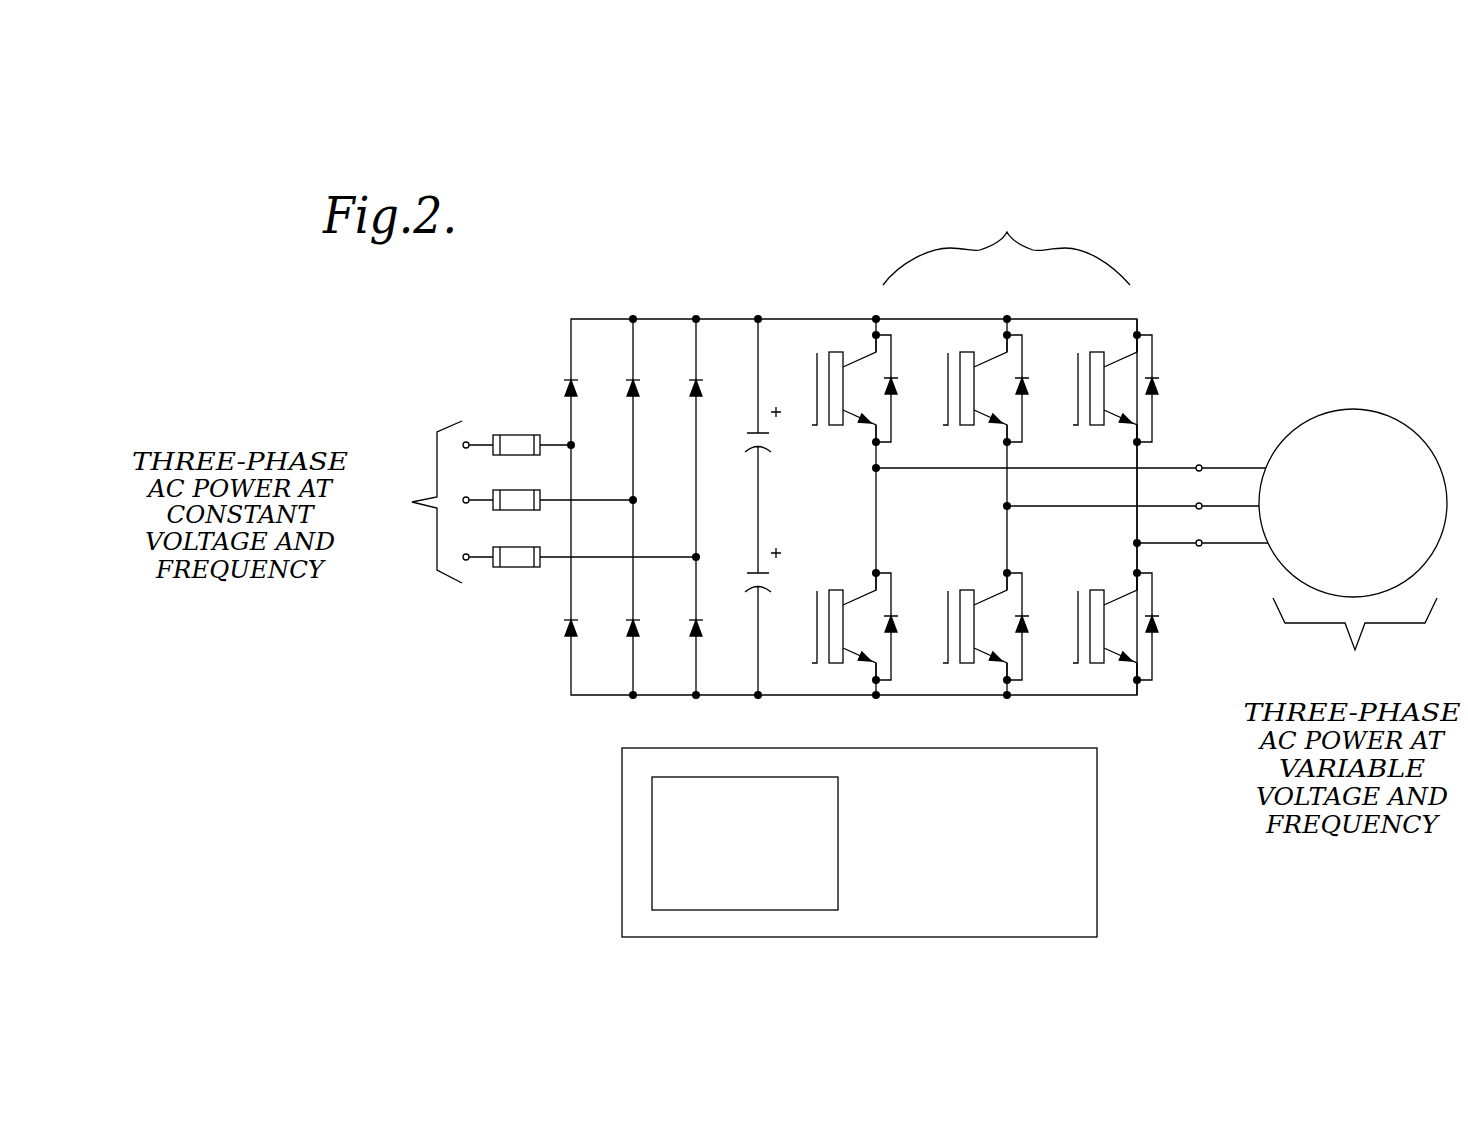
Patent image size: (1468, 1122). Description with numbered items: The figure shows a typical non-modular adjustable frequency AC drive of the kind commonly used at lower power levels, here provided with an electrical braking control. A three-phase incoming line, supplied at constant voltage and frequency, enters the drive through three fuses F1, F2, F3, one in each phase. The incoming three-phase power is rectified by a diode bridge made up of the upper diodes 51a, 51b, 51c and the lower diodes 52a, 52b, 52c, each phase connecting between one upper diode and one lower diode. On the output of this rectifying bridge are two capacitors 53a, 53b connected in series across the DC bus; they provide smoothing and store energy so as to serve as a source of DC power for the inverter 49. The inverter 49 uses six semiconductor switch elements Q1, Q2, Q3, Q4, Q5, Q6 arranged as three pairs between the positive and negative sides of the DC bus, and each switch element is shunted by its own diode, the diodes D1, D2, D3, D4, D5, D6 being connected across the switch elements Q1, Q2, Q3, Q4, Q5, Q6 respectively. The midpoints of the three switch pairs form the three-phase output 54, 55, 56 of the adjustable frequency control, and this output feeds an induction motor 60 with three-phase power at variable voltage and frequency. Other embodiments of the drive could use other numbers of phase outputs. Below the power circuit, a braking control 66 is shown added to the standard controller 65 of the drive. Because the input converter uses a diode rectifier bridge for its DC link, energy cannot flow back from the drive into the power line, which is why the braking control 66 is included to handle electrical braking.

The inverter 49 is at (999, 435).
The diode bridge diode 51a is at (563, 388).
The diode bridge diode 51b is at (627, 392).
The diode bridge diode 51c is at (688, 392).
The diode bridge diode 52a is at (563, 632).
The diode bridge diode 52b is at (628, 636).
The diode bridge diode 52c is at (702, 634).
The capacitor 53a is at (773, 448).
The capacitor 53b is at (787, 576).
The three-phase output 54 is at (1202, 464).
The three-phase output 55 is at (1197, 508).
The three-phase output 56 is at (1202, 546).
The induction motor 60 is at (1368, 408).
The standard controller 65 is at (1097, 880).
The braking control 66 is at (652, 852).
The fuse F1 is at (517, 429).
The fuse F2 is at (548, 485).
The fuse F3 is at (579, 542).
The semiconductor switch element Q1 is at (846, 388).
The semiconductor switch element Q2 is at (846, 626).
The semiconductor switch element Q3 is at (977, 388).
The semiconductor switch element Q4 is at (977, 626).
The semiconductor switch element Q5 is at (1107, 388).
The semiconductor switch element Q6 is at (1107, 626).
The diode D1 is at (901, 388).
The diode D2 is at (901, 626).
The diode D3 is at (1032, 388).
The diode D4 is at (1032, 626).
The diode D5 is at (1162, 388).
The diode D6 is at (1162, 626).